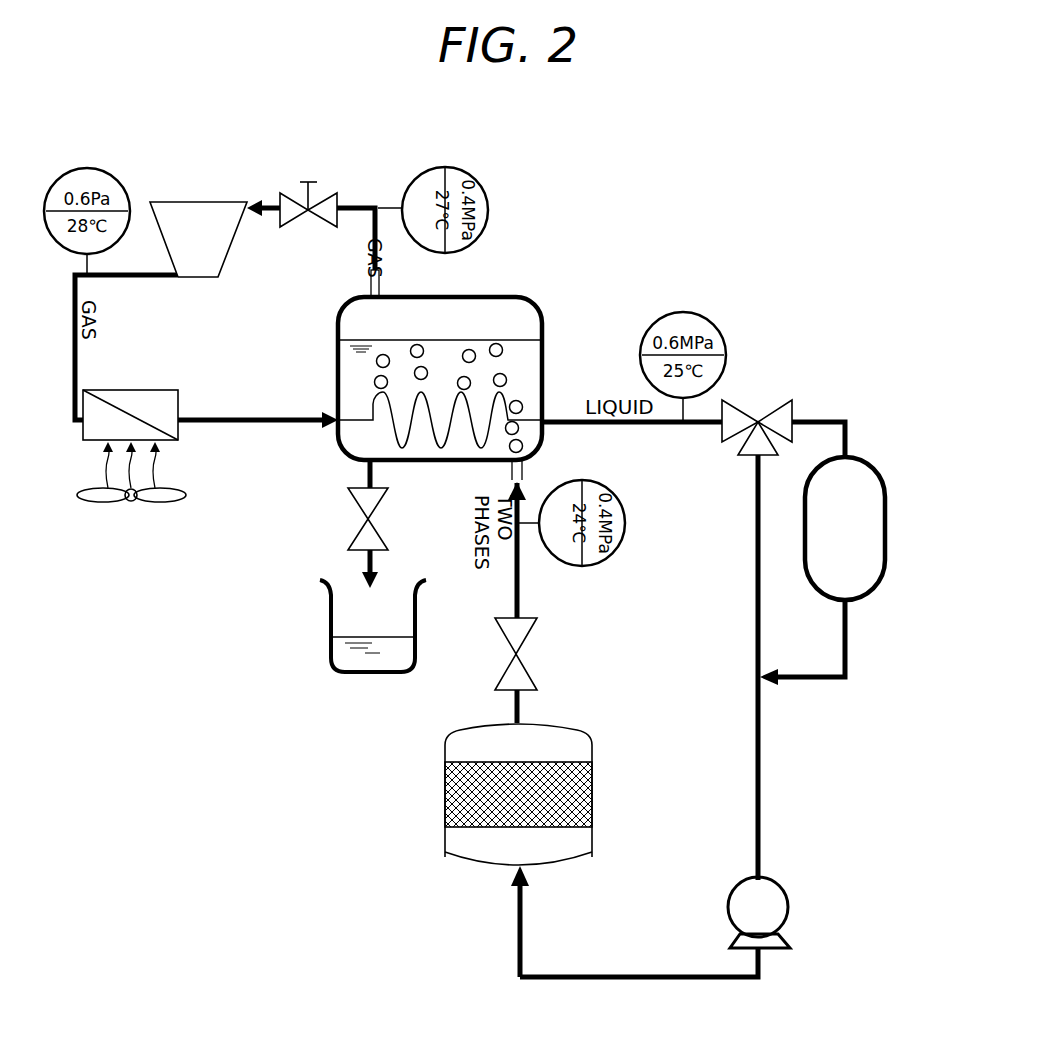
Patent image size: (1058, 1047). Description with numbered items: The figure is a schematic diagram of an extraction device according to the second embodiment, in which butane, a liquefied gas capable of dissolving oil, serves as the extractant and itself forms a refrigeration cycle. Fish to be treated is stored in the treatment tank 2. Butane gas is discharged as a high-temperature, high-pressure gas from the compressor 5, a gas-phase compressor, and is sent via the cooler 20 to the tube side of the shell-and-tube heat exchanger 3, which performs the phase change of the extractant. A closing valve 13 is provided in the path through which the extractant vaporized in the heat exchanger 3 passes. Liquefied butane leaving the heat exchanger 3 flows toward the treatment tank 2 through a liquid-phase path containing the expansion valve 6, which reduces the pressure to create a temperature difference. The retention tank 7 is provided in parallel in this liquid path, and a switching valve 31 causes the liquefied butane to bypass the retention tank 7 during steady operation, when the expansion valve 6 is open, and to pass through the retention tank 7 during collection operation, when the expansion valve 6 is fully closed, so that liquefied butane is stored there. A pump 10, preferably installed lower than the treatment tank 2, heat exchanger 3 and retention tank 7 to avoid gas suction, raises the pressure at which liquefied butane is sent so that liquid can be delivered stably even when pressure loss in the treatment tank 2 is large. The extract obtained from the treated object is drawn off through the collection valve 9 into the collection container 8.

The treatment tank 2 is at (445, 808).
The heat exchanger 3 is at (542, 318).
The compressor 5 is at (186, 203).
The expansion valve 6 is at (537, 676).
The retention tank 7 is at (886, 506).
The collection container 8 is at (330, 652).
The collection valve 9 is at (345, 495).
The pump 10 is at (792, 916).
The closing valve 13 is at (336, 197).
The cooler 20 is at (167, 390).
The switching valve 31 is at (780, 398).